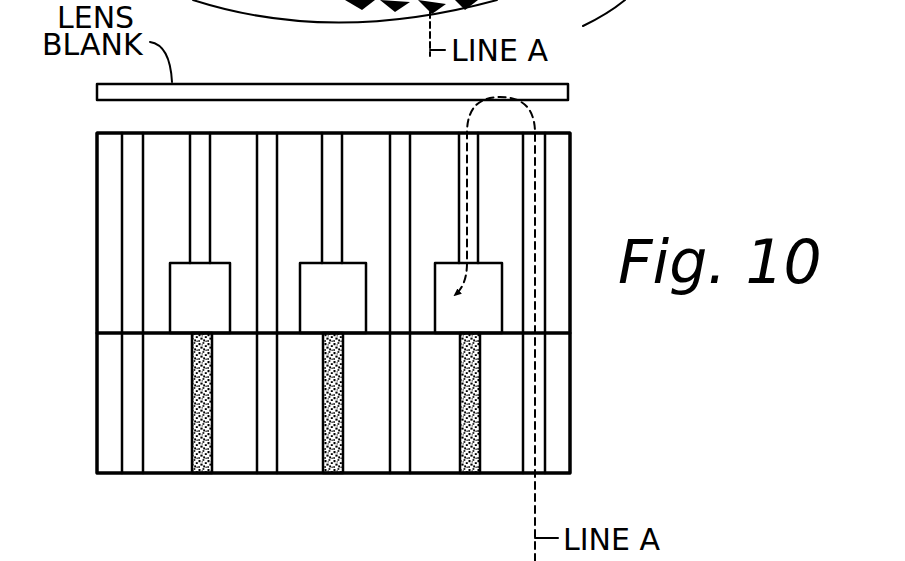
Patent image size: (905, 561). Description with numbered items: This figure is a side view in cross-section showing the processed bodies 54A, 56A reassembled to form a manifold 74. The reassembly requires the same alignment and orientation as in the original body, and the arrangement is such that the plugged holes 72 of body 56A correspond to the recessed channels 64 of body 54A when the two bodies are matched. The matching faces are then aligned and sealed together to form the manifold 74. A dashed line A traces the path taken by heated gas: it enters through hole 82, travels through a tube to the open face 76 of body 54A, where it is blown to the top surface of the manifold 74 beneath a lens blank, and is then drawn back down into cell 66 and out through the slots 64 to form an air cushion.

The body 54A is at (97, 268).
The body 56A is at (97, 445).
The channels 64 is at (218, 311).
The holes 66 is at (199, 145).
The filled holes 72 is at (202, 475).
The manifold 74 is at (563, 72).
The open face 76 is at (290, 133).
The hole 82 is at (268, 460).